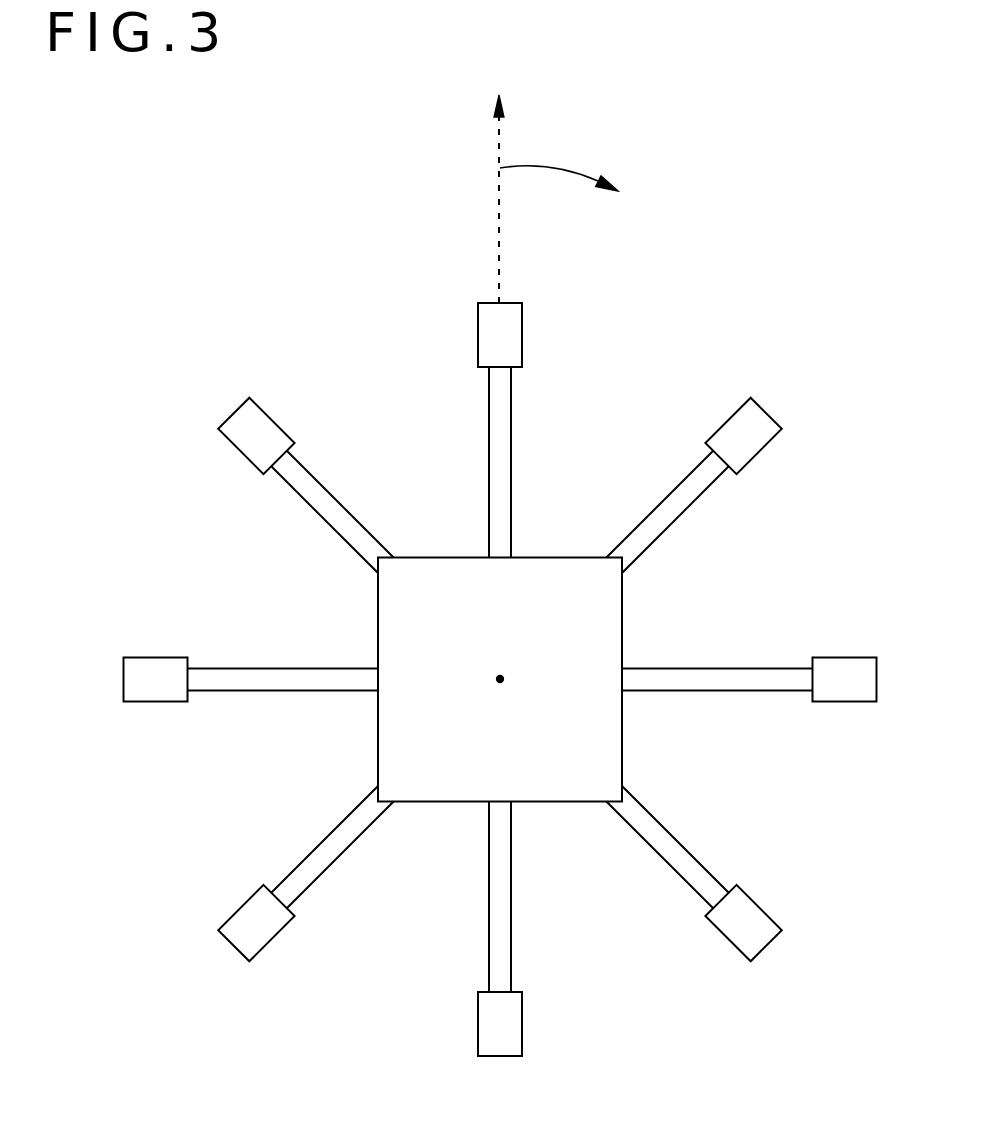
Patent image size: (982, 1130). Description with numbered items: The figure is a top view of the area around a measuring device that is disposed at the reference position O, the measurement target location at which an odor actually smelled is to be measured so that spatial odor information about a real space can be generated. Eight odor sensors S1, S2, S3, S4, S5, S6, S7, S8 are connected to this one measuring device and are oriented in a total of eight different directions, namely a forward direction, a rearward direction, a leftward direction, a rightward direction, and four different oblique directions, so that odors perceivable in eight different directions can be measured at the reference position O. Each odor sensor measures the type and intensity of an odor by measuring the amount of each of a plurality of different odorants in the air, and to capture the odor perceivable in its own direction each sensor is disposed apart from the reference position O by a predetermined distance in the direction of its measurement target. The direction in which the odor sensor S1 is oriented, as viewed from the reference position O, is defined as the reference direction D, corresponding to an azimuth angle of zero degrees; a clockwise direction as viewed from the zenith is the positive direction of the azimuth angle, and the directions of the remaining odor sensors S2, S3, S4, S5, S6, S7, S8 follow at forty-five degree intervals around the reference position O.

The odor sensor S1 is at (522, 331).
The odor sensor S2 is at (760, 448).
The odor sensor S3 is at (845, 701).
The odor sensor S4 is at (762, 905).
The odor sensor S5 is at (522, 1018).
The odor sensor S6 is at (273, 937).
The odor sensor S7 is at (157, 701).
The odor sensor S8 is at (270, 420).
The reference position O is at (500, 684).
The reference direction D is at (499, 181).